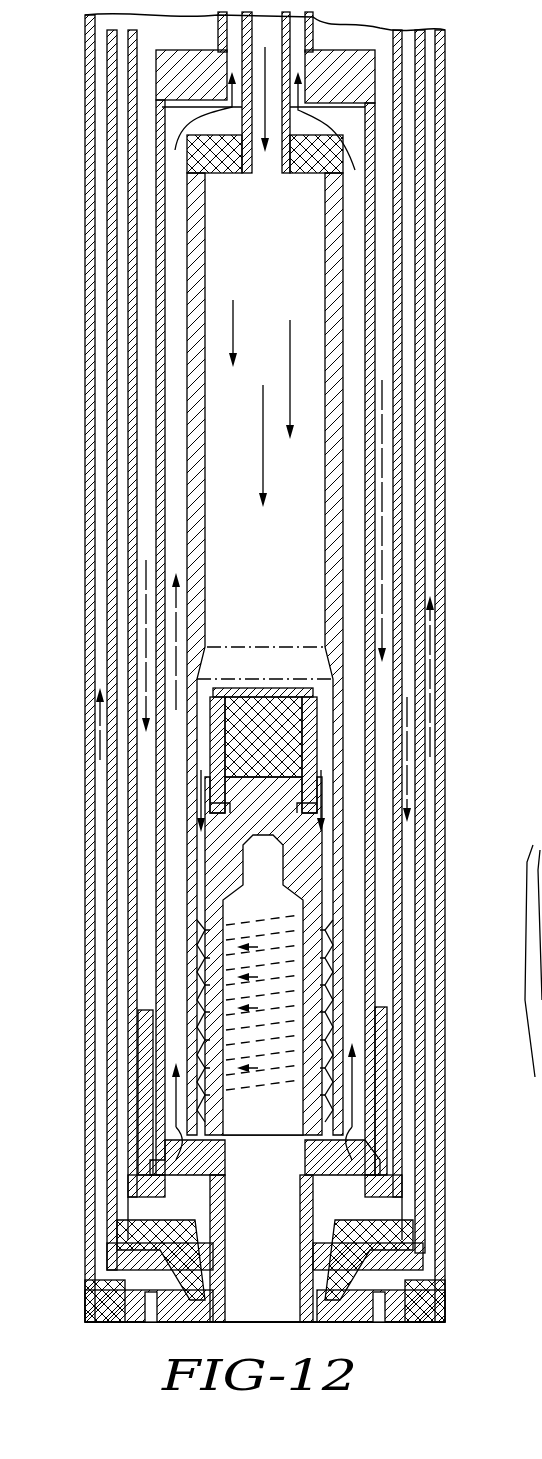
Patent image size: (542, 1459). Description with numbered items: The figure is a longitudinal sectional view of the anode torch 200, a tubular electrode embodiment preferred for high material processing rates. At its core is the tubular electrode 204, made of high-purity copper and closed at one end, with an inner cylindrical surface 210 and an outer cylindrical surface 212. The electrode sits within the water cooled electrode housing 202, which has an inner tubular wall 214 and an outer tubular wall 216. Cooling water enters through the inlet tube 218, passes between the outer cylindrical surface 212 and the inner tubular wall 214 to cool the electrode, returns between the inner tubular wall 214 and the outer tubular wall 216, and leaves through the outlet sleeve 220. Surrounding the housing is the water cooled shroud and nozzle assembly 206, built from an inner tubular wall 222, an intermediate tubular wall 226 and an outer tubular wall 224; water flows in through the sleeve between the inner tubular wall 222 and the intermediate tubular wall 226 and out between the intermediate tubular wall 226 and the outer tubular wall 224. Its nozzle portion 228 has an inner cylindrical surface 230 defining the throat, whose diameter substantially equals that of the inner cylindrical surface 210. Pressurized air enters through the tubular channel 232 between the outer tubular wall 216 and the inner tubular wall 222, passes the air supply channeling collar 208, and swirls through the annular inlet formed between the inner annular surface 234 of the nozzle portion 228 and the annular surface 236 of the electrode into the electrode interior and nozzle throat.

The anode torch 200 is at (468, 292).
The electrode housing 202 is at (336, 636).
The tubular electrode 204 is at (288, 808).
The shroud and nozzle assembly 206 is at (448, 420).
The air supply channeling collar 208 is at (383, 1052).
The inner cylindrical surface 210 is at (283, 913).
The outer cylindrical surface 212 is at (333, 990).
The inner tubular wall 214 is at (335, 888).
The outer tubular wall 216 is at (375, 700).
The inlet tube 218 is at (268, 162).
The outlet sleeve 220 is at (314, 50).
The inner tubular wall 222 is at (128, 578).
The outer tubular wall 224 is at (92, 718).
The intermediate tubular wall 226 is at (112, 660).
The nozzle portion 228 is at (186, 1326).
The inner cylindrical surface 230 is at (300, 1278).
The tubular channel 232 is at (145, 986).
The inner annular surface 234 is at (230, 1172).
The annular surface 236 is at (198, 1160).